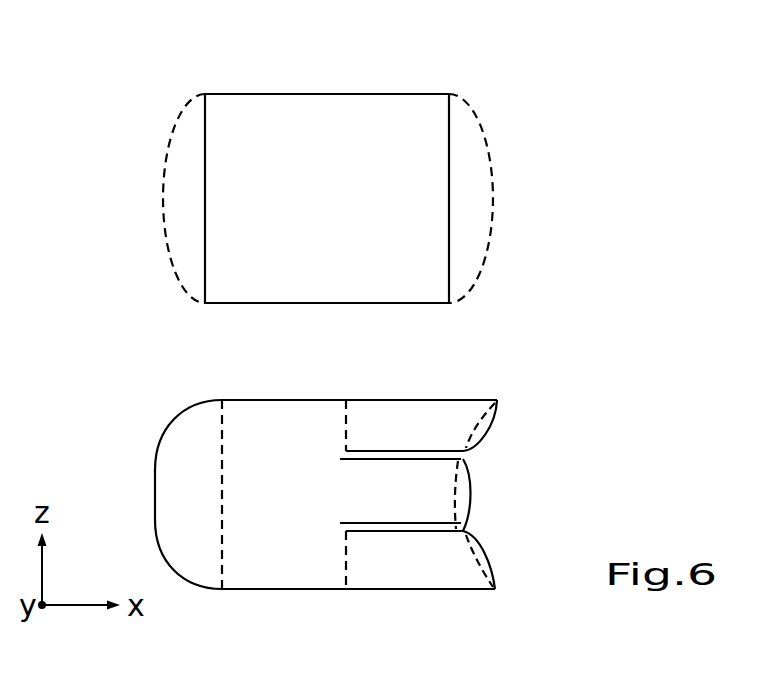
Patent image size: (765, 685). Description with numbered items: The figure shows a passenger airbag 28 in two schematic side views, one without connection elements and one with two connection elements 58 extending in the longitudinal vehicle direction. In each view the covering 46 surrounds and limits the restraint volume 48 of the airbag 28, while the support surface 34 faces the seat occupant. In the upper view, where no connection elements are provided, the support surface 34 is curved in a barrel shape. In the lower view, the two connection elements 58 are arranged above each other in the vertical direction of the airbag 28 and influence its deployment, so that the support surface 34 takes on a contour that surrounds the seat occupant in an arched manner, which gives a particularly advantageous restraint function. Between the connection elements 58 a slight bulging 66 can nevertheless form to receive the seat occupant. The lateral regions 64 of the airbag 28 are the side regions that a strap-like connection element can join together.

The passenger airbag 28 is at (498, 72).
The support surface 34 is at (565, 195).
The covering 46 is at (298, 93).
The restraint volume 48 is at (336, 208).
The connection elements 58 is at (405, 451).
The lateral regions 64 is at (262, 398).
The bulging 66 is at (488, 427).